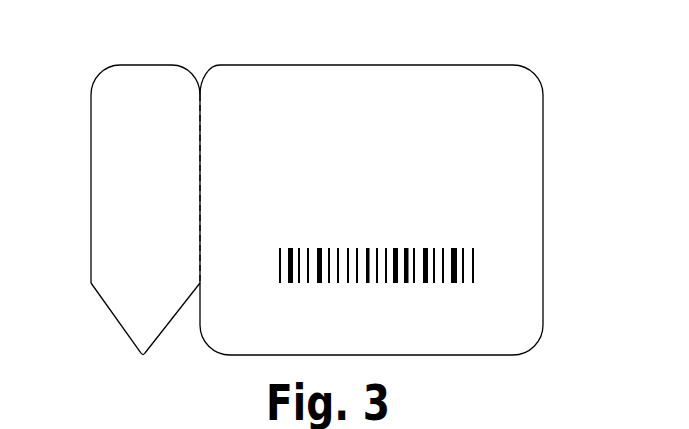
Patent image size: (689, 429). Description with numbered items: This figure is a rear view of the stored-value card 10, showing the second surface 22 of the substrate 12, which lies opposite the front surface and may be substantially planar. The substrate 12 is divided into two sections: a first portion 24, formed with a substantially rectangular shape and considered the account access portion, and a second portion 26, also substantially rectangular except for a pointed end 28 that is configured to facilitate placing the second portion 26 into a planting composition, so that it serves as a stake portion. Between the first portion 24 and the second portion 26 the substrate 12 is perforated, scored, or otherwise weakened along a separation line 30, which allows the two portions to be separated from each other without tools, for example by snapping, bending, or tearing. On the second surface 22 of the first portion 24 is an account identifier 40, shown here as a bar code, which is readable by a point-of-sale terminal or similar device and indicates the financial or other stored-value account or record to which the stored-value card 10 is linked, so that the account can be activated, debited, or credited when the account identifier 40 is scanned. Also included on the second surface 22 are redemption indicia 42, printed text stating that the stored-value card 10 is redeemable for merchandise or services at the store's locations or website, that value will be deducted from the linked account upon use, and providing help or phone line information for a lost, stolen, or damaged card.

The stored-value card 10 is at (98, 39).
The substrate 12 is at (112, 109).
The second surface 22 is at (112, 213).
The first portion 24 is at (471, 86).
The second portion 26 is at (151, 86).
The pointed end 28 is at (143, 336).
The separation line 30 is at (208, 117).
The account identifier 40 is at (443, 297).
The redemption indicia 42 is at (529, 117).